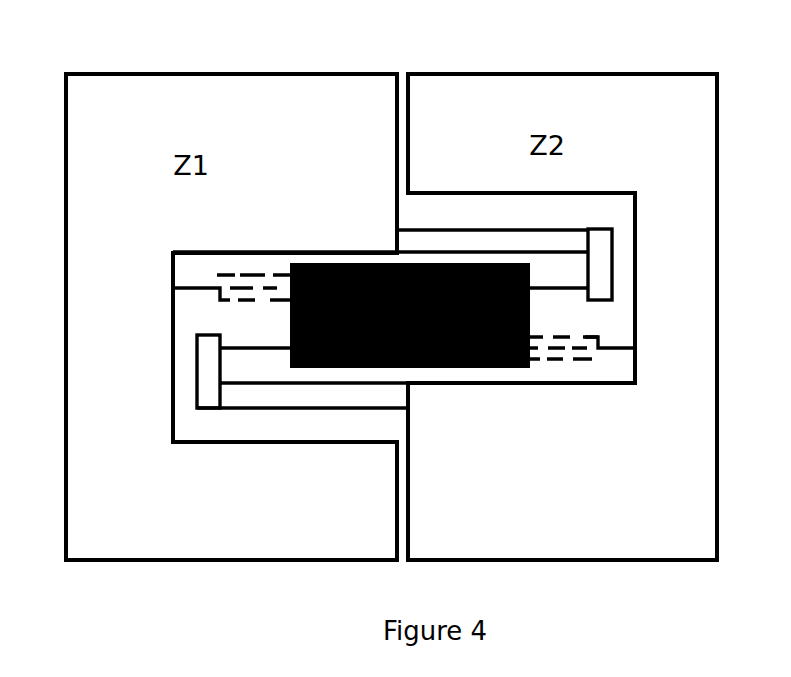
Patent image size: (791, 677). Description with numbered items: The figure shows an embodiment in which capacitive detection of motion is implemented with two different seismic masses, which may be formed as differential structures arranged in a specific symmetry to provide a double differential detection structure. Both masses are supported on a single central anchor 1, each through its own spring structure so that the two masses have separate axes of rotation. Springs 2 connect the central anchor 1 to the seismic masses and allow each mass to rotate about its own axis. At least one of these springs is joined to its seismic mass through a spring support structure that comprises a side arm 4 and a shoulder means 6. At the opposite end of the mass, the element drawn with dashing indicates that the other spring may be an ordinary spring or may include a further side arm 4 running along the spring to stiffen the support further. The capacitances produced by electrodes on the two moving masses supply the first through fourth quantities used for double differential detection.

The component body 1 is at (410, 315).
The electrode layer 2 is at (200, 286).
The side arm 4 is at (267, 304).
The shoulder means 6 is at (196, 361).